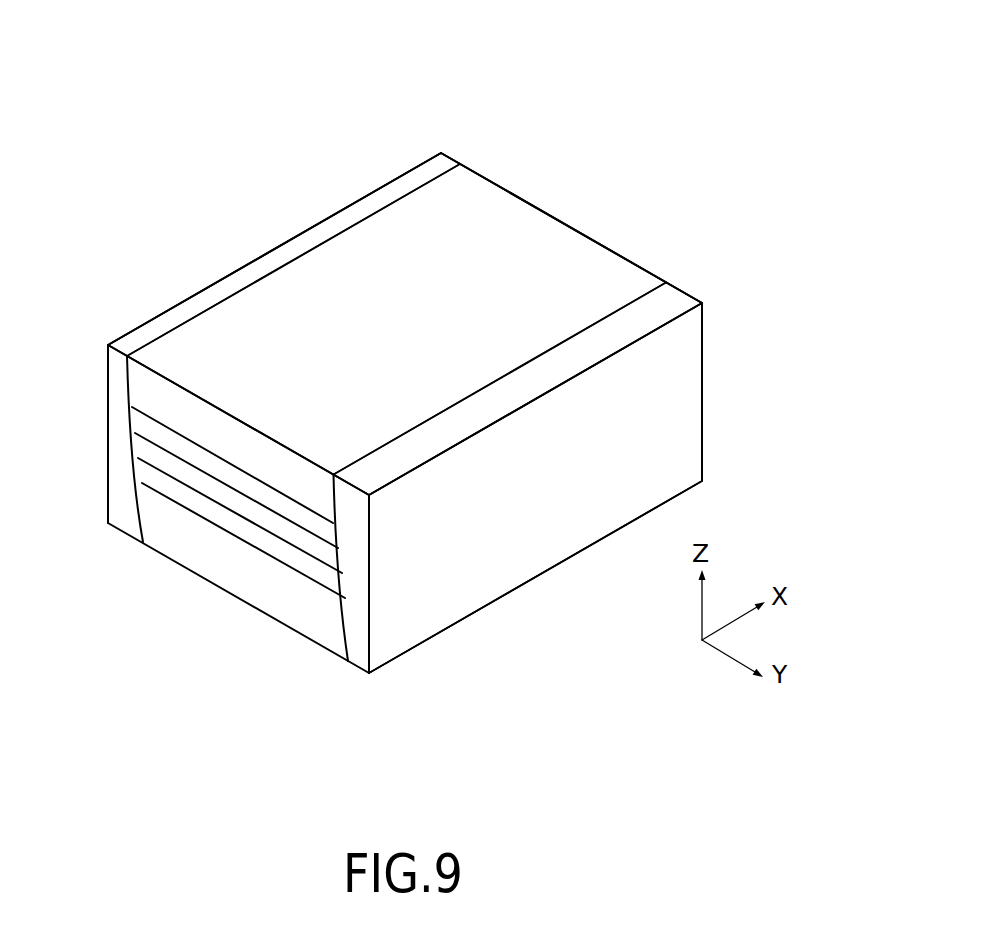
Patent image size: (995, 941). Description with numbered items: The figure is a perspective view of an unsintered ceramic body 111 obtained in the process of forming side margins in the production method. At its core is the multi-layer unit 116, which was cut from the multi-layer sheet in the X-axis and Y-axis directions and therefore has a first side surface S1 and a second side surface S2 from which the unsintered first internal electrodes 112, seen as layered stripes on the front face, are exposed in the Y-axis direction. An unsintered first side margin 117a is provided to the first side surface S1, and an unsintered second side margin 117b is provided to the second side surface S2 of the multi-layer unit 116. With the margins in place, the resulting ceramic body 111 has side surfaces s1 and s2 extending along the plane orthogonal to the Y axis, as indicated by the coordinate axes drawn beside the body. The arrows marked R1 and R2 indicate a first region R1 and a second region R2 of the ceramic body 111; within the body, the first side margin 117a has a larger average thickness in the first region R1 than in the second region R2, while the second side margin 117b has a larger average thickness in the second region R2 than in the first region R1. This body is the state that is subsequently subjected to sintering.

The unsintered ceramic body 111 is at (597, 75).
The unsintered first internal electrodes 112 is at (263, 483).
The multi-layer unit 116 is at (502, 212).
The unsintered first side margin 117a is at (425, 175).
The unsintered second side margin 117b is at (685, 300).
The first side surface S1 is at (300, 257).
The second side surface S2 is at (537, 370).
The side surface s1 is at (213, 297).
The side surface s2 is at (552, 540).
The first region R1 is at (475, 690).
The second region R2 is at (475, 110).